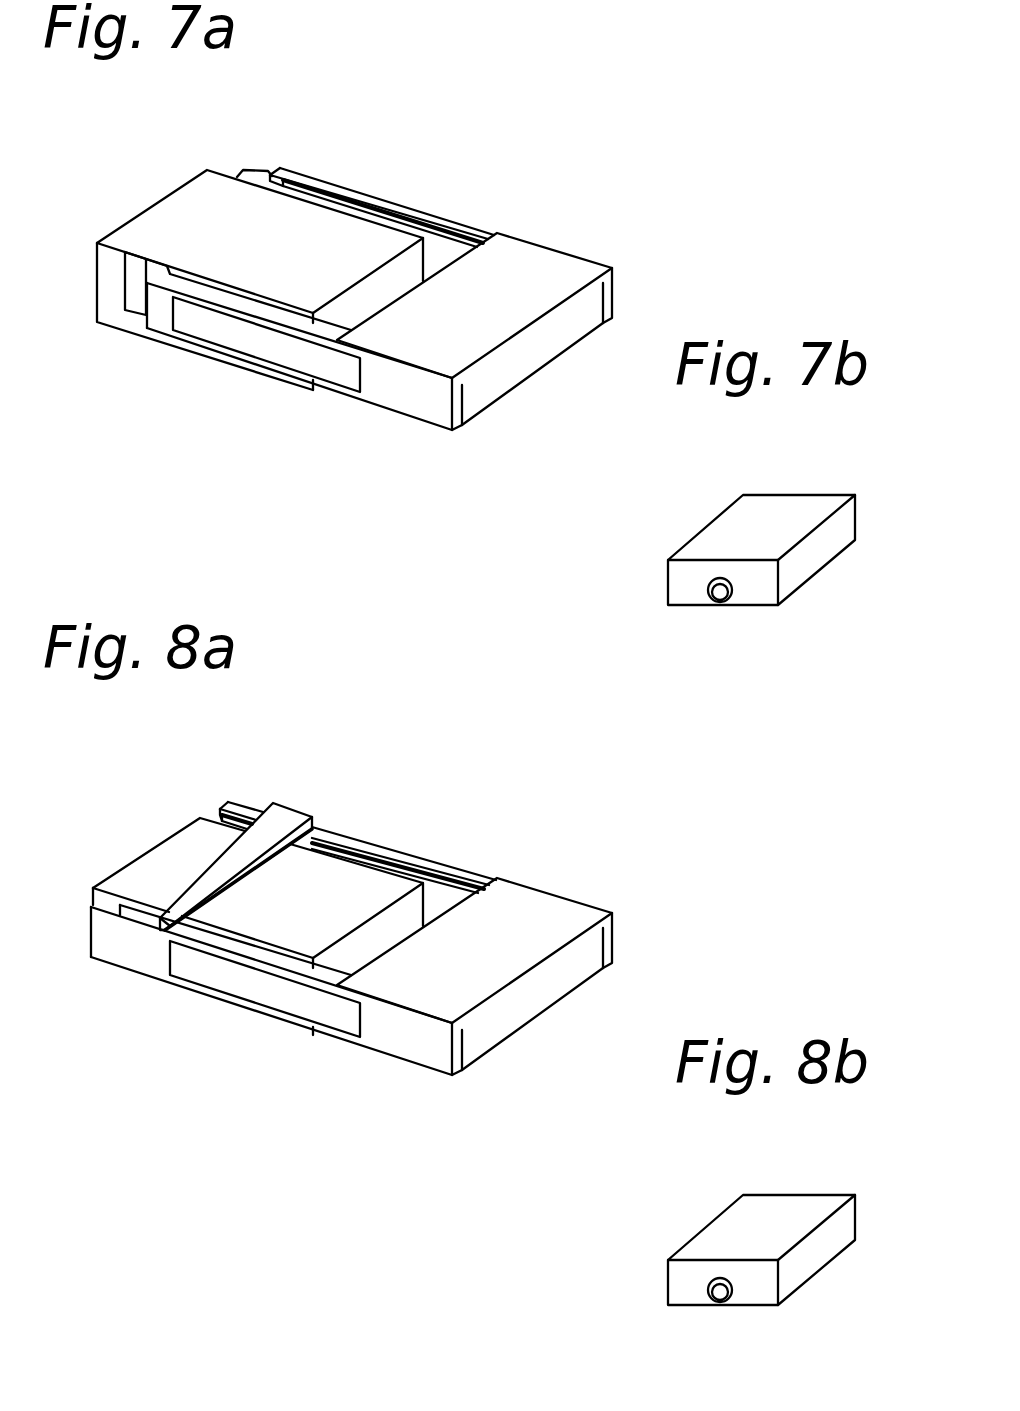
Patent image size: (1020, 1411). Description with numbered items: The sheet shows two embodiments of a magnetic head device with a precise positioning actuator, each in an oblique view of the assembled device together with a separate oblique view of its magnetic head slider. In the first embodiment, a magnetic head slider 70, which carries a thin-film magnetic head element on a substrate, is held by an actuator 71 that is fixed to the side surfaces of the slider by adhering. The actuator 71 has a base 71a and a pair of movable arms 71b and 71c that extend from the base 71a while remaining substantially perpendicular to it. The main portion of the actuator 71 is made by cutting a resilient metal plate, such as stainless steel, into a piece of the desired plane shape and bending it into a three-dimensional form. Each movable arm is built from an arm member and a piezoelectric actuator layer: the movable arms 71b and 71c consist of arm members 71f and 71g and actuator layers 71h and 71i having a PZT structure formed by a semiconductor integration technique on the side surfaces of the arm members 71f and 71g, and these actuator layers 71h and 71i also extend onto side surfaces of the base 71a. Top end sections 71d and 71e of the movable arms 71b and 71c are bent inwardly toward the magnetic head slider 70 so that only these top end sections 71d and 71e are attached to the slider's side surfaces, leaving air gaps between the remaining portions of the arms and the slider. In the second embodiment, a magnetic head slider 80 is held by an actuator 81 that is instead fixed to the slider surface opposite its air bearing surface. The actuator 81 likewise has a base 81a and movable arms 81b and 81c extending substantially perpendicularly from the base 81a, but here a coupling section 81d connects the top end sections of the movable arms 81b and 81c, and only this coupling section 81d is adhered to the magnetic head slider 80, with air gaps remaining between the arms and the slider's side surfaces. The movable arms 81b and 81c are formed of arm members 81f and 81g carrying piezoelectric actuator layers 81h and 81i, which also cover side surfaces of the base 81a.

In FIG. 7A, the magnetic head slider 70 is at (162, 216).
In FIG. 7B, the magnetic head slider 70 is at (823, 507).
In FIG. 7A, the actuator 71 is at (380, 289).
In FIG. 7A, the base 71a is at (500, 332).
In FIG. 7B, the base 71a is at (718, 601).
In FIG. 7A, the movable arm 71b is at (412, 162).
In FIG. 7A, the movable arm 71c is at (256, 376).
In FIG. 7A, the top end section 71d is at (256, 167).
In FIG. 7A, the top end section 71e is at (136, 300).
In FIG. 7A, the arm member 71f is at (380, 187).
In FIG. 7A, the arm member 71g is at (159, 333).
In FIG. 7A, the actuator layer 71h is at (446, 212).
In FIG. 7A, the actuator layer 71i is at (266, 366).
In FIG. 8A, the magnetic head slider 80 is at (130, 871).
In FIG. 8B, the magnetic head slider 80 is at (823, 1207).
In FIG. 8A, the actuator 81 is at (393, 934).
In FIG. 8A, the base 81a is at (497, 977).
In FIG. 8B, the base 81a is at (718, 1301).
In FIG. 8A, the movable arm 81b is at (387, 808).
In FIG. 8A, the movable arm 81c is at (271, 1025).
In FIG. 8A, the coupling section 81d is at (222, 858).
In FIG. 8A, the arm member 81f is at (350, 833).
In FIG. 8A, the arm member 81g is at (158, 962).
In FIG. 8A, the actuator layer 81h is at (446, 857).
In FIG. 8A, the actuator layer 81i is at (232, 982).